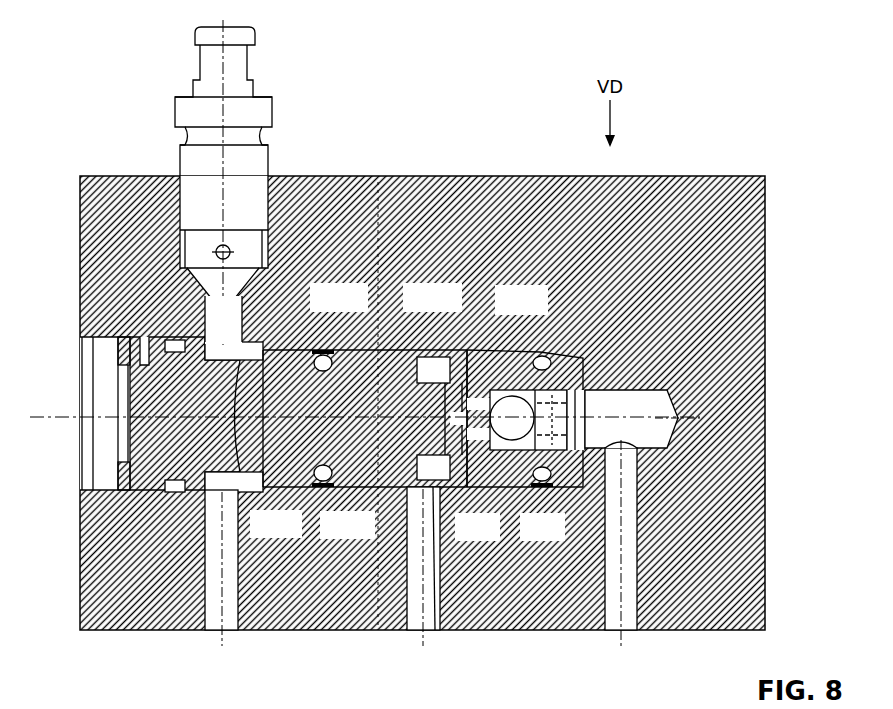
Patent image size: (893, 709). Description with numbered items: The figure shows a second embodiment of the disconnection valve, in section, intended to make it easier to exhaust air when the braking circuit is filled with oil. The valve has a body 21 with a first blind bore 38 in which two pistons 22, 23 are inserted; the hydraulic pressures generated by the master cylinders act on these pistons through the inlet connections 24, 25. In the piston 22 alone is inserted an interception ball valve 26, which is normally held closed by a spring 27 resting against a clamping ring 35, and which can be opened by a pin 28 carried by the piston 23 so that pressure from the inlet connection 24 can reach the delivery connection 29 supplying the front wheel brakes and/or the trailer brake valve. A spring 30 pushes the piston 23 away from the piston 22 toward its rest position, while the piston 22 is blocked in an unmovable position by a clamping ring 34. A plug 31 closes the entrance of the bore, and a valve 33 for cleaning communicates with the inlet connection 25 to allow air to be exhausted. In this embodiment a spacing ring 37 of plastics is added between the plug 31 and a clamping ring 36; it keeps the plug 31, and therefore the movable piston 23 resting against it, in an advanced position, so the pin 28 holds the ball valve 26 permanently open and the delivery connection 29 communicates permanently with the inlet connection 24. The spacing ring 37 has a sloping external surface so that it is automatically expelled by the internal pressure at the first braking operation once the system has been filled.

The body 21 is at (745, 292).
The piston 22 is at (518, 373).
The piston 23 is at (347, 372).
The inlet connection 24 is at (628, 622).
The inlet connection 25 is at (215, 617).
The interception ball valve 26 is at (480, 487).
The spring 27 is at (540, 487).
The pin 28 is at (455, 420).
The delivery connection 29 is at (410, 620).
The spring 30 is at (395, 497).
The plug 31 is at (152, 390).
The valve for cleaning 33 is at (262, 165).
The clamping ring 34 is at (430, 627).
The clamping ring 35 is at (587, 397).
The clamping ring 36 is at (115, 348).
The spacing ring 37 is at (130, 468).
The first blind bore 38 is at (256, 484).